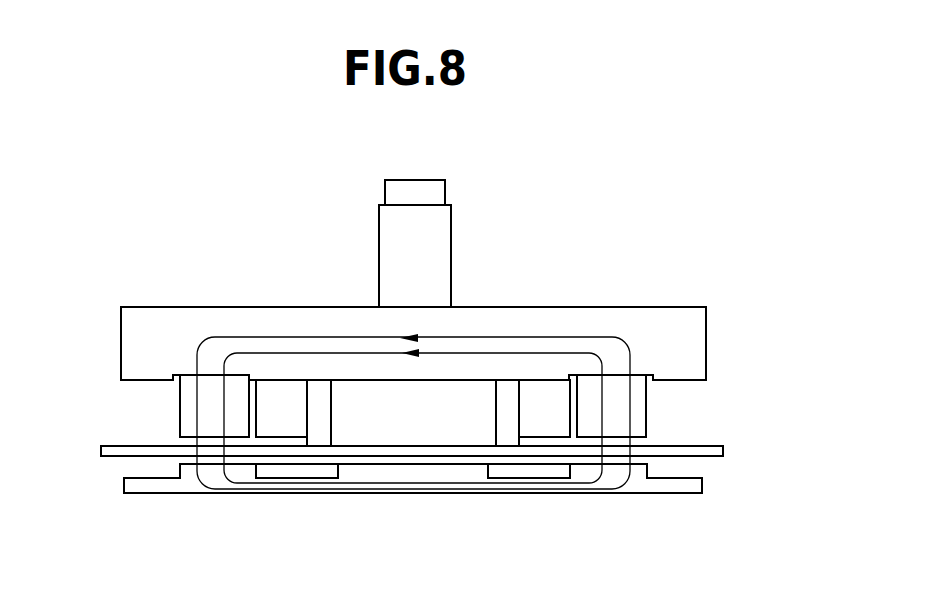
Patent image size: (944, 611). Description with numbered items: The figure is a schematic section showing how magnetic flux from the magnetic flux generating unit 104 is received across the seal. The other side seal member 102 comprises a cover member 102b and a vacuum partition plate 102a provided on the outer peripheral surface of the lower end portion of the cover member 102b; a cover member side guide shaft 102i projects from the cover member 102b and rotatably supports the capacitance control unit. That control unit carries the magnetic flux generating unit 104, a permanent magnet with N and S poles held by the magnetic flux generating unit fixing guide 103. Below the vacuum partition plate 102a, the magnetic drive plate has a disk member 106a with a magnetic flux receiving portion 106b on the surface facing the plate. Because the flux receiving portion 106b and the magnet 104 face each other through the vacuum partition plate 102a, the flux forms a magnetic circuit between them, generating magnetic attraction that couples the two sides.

The other side seal member 102 is at (478, 185).
The cover member side guide shaft 102i is at (434, 262).
The cover member 102b is at (362, 405).
The vacuum partition plate 102a is at (697, 447).
The magnetic flux generating unit fixing guide 103 is at (684, 323).
The magnetic flux generating unit 104 is at (637, 408).
The disk member 106a is at (494, 496).
The magnetic flux receiving portion 106b is at (638, 472).